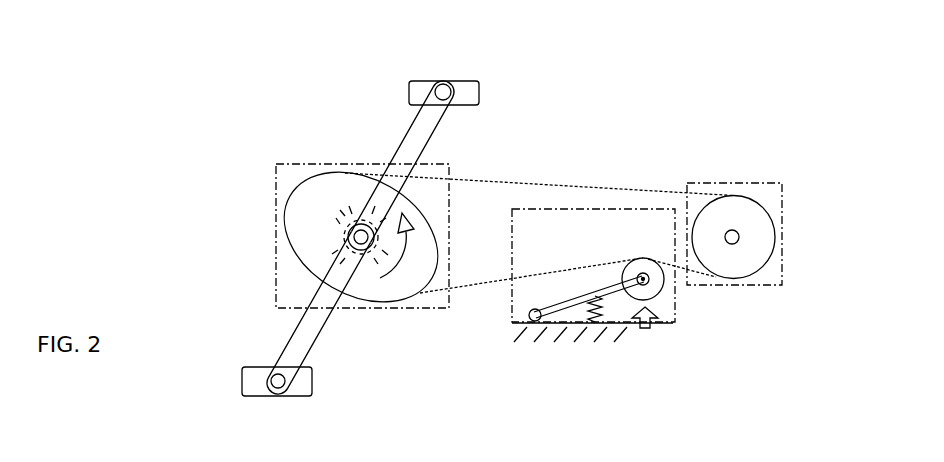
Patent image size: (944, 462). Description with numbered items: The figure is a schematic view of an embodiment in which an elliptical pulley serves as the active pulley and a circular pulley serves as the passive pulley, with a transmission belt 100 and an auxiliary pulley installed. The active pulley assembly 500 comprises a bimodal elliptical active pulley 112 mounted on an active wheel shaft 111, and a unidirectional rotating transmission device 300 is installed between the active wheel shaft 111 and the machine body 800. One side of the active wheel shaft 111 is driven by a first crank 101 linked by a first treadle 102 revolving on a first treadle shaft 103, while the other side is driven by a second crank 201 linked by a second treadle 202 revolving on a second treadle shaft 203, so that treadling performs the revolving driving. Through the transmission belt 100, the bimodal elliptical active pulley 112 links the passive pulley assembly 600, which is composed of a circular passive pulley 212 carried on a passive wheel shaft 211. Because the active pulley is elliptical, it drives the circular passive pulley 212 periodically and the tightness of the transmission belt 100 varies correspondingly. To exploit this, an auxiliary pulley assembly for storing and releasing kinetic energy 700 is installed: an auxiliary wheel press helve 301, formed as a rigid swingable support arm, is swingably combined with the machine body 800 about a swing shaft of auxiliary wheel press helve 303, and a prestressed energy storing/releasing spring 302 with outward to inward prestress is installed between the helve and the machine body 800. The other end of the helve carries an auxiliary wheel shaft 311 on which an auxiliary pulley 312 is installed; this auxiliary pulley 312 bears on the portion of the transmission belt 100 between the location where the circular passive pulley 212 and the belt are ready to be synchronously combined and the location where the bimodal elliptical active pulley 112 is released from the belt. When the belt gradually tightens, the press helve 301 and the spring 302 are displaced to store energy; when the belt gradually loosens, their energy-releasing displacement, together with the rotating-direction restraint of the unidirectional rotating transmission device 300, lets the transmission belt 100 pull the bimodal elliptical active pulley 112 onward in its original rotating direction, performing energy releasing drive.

The transmission belt 100 is at (527, 182).
The first crank 101 is at (432, 128).
The first treadle 102 is at (432, 80).
The first treadle shaft 103 is at (451, 92).
The active wheel shaft 111 is at (362, 224).
The bimodal elliptical active pulley 112 is at (418, 207).
The second crank 201 is at (295, 347).
The second treadle 202 is at (312, 381).
The second treadle shaft 203 is at (271, 383).
The passive wheel shaft 211 is at (739, 233).
The circular passive pulley 212 is at (777, 257).
The unidirectional rotating transmission device 300 is at (350, 244).
The auxiliary wheel press helve 301 is at (563, 307).
The prestressed energy storing/releasing spring 302 is at (603, 300).
The swing shaft of auxiliary wheel press helve 303 is at (529, 315).
The auxiliary wheel shaft 311 is at (643, 258).
The auxiliary pulley 312 is at (660, 292).
The active pulley assembly 500 is at (275, 187).
The passive pulley assembly 600 is at (782, 267).
The auxiliary pulley assembly for storing/releasing kinetic energy 700 is at (597, 209).
The machine body 800 is at (342, 230).